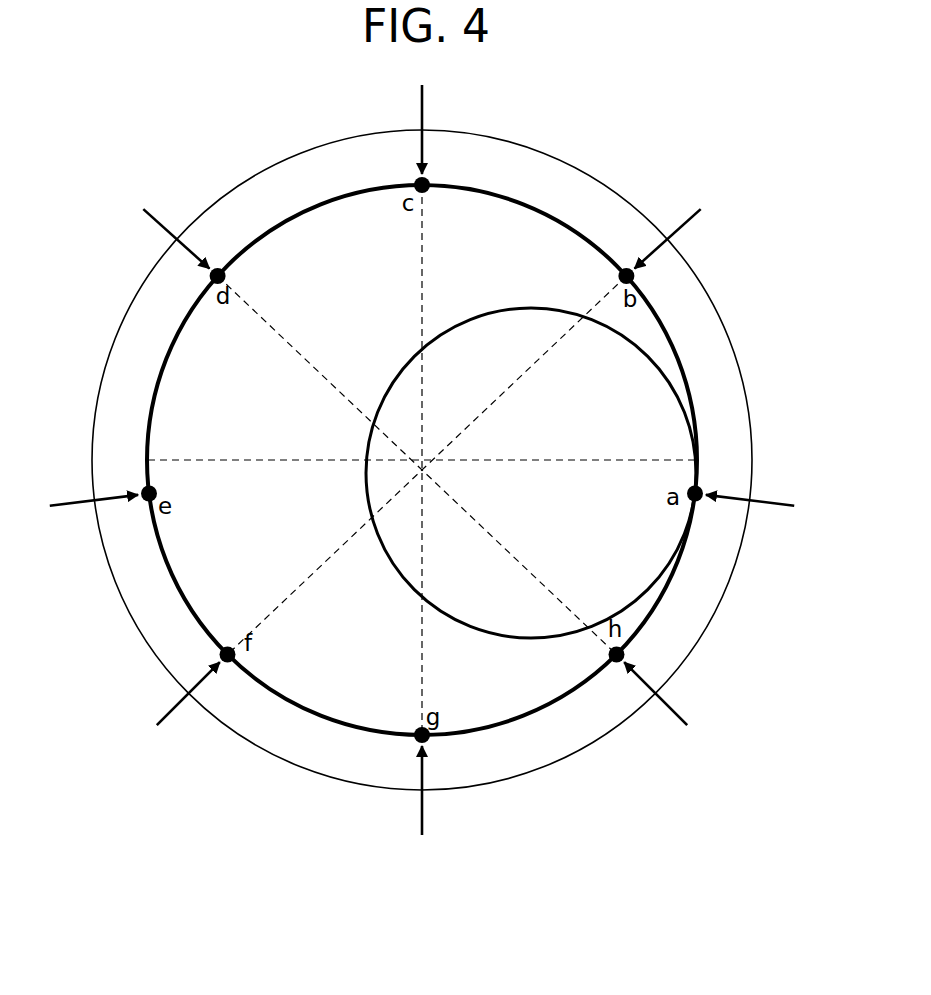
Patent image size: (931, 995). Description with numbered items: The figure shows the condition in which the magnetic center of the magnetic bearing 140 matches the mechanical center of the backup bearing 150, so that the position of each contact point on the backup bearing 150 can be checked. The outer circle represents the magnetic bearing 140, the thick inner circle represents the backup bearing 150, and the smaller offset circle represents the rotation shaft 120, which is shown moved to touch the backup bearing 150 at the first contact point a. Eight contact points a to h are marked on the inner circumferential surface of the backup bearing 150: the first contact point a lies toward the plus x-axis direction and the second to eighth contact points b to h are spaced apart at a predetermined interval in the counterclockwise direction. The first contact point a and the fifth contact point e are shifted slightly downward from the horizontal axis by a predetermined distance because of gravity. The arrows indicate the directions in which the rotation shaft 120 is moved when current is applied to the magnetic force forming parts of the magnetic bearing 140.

The rotation shaft 120 is at (640, 343).
The backup bearing 150 is at (675, 348).
The magnetic bearing 140 is at (743, 383).